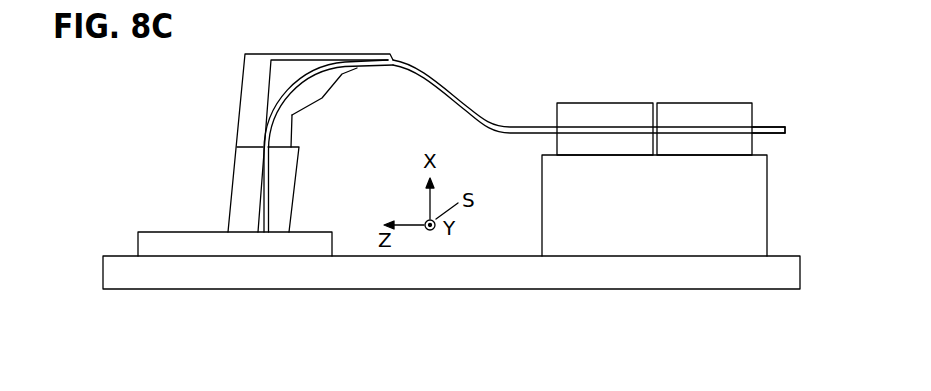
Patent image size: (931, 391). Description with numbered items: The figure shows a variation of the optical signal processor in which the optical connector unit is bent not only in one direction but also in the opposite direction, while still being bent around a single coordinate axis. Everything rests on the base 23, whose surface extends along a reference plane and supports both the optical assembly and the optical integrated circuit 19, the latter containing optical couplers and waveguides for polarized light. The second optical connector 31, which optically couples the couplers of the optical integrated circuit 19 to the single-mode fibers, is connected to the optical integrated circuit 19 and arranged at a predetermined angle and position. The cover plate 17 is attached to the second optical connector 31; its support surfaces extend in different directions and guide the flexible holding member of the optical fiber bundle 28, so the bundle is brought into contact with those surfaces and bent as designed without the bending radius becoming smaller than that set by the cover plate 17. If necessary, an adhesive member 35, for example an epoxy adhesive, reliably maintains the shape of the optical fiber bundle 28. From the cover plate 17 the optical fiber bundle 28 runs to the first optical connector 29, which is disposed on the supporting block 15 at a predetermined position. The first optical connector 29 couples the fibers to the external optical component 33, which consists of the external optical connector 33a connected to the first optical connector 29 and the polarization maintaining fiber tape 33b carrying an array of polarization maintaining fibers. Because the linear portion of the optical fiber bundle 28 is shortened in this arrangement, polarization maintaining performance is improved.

The supporting block 15 is at (767, 195).
The cover plate 17 is at (237, 111).
The optical integrated circuit 19 is at (170, 232).
The base 23 is at (767, 290).
The optical fiber bundle 28 is at (500, 131).
The first optical connector 29 is at (612, 102).
The second optical connector 31 is at (296, 178).
The external optical component 33 is at (736, 84).
The external optical connector 33a is at (683, 102).
The polarization maintaining fiber tape 33b is at (784, 91).
The adhesive member 35 is at (323, 97).